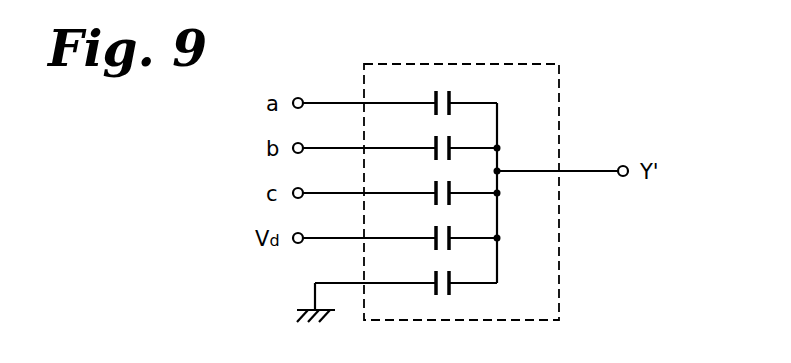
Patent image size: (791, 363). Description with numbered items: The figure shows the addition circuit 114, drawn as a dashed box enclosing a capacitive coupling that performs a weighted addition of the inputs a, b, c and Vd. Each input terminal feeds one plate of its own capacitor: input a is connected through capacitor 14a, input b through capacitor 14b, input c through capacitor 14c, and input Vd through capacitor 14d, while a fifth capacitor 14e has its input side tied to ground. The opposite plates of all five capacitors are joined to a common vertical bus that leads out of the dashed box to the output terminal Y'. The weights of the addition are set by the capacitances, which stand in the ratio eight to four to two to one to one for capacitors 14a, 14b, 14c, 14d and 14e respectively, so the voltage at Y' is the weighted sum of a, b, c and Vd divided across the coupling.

The addition circuit 114 is at (559, 88).
The capacitor C14a 14a is at (412, 95).
The capacitor C14b 14b is at (412, 140).
The capacitor C14c 14c is at (412, 185).
The capacitor C14d 14d is at (412, 230).
The capacitor C14e 14e is at (412, 275).